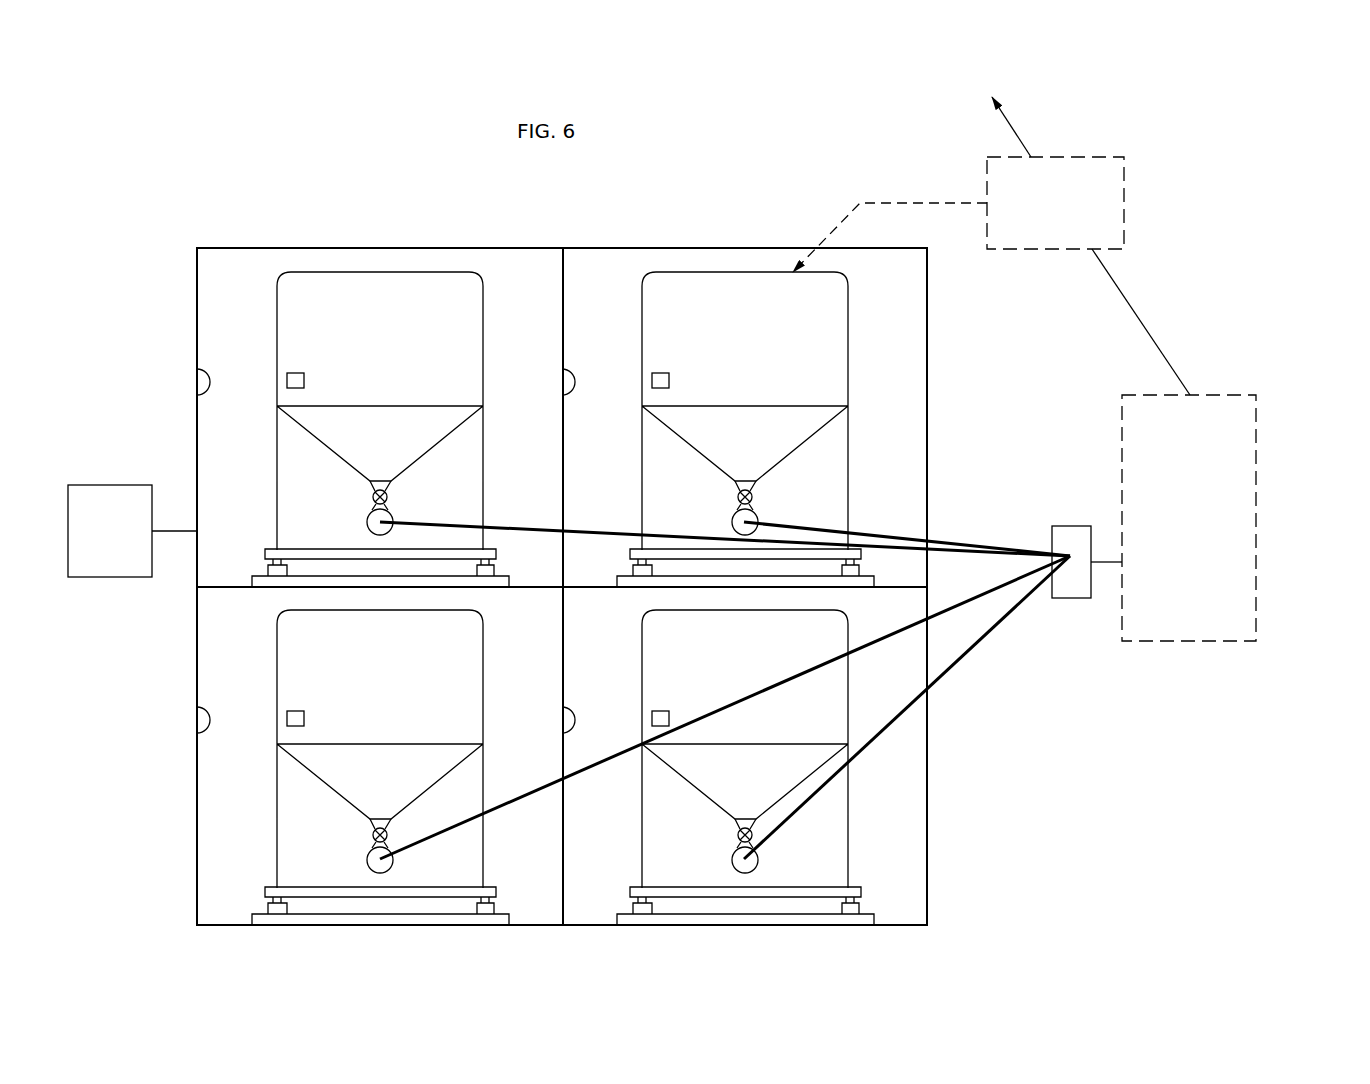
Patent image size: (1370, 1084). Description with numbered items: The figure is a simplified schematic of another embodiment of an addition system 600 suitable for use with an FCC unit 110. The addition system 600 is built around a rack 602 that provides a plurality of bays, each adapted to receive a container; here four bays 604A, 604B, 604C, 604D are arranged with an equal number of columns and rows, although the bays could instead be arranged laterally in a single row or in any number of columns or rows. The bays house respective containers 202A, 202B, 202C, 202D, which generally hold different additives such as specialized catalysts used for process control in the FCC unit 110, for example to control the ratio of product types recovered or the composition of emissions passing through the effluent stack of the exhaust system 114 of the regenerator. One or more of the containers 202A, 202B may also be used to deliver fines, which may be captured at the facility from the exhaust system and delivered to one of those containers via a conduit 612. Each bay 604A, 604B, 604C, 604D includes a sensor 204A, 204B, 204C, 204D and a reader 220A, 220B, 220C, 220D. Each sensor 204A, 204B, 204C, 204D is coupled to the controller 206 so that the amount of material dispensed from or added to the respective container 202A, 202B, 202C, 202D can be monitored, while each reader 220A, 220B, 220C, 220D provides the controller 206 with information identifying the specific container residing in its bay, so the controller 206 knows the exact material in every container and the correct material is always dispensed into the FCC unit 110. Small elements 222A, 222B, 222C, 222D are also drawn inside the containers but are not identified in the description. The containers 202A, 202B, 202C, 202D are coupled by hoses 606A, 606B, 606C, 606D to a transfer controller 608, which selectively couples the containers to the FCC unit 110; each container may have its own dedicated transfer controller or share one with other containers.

The addition system 600 is at (667, 173).
The rack 602 is at (927, 740).
The bay 604A is at (228, 282).
The bay 604B is at (605, 280).
The bay 604C is at (223, 895).
The bay 604D is at (903, 893).
The container 202A is at (403, 305).
The container 202B is at (745, 411).
The container 202C is at (380, 749).
The container 202D is at (745, 749).
The sensor 204A is at (313, 548).
The sensor 204B is at (707, 514).
The sensor 204C is at (342, 852).
The sensor 204D is at (707, 852).
The controller 206 is at (132, 545).
The reader 220A is at (214, 382).
The reader 220B is at (597, 359).
The reader 220C is at (232, 697).
The reader 220D is at (598, 697).
The sensor 222A is at (297, 373).
The sensor 222B is at (697, 355).
The sensor 222C is at (332, 693).
The sensor 222D is at (698, 693).
The hose 606A is at (522, 527).
The hose 606B is at (882, 533).
The hose 606C is at (527, 793).
The hose 606D is at (892, 728).
The transfer controller 608 is at (1068, 526).
The FCC unit 110 is at (1256, 428).
The exhaust system 114 is at (1124, 190).
The conduit 612 is at (920, 203).